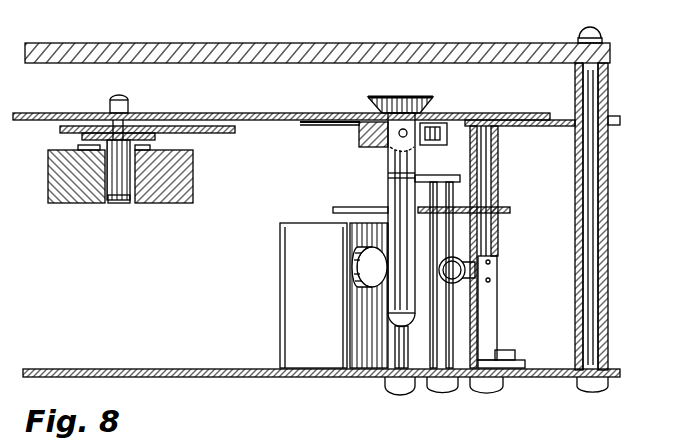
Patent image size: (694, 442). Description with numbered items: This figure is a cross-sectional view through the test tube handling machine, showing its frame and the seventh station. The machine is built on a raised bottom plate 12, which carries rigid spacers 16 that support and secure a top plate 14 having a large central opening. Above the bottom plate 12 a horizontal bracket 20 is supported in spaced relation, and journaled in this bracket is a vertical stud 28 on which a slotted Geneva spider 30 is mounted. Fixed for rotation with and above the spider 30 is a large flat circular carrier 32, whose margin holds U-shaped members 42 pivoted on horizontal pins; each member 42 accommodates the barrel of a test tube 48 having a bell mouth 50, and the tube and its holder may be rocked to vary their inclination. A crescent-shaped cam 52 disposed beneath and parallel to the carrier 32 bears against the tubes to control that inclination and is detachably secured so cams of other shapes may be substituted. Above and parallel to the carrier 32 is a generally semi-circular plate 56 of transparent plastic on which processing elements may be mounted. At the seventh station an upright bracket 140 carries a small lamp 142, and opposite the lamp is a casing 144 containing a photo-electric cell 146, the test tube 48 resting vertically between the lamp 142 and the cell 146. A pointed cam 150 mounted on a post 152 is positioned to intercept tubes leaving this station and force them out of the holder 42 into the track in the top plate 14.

The bottom plate 12 is at (250, 353).
The top plate 14 is at (612, 116).
The rigid spacers 16 is at (608, 214).
The horizontal bracket 20 is at (190, 192).
The vertical stud 28 is at (118, 204).
The Geneva spider 30 is at (220, 135).
The carrier 32 is at (250, 112).
The U-shaped member 42 is at (358, 136).
The test tube 48 is at (392, 165).
The bell mouth 50 is at (430, 100).
The cam 52 is at (510, 213).
The semi-circular plate 56 is at (110, 66).
The upright bracket 140 is at (497, 330).
The lamp 142 is at (460, 282).
The housing 144 is at (283, 300).
The photo-electric cell 146 is at (356, 266).
The pointed cam 150 is at (447, 173).
The post 152 is at (448, 200).